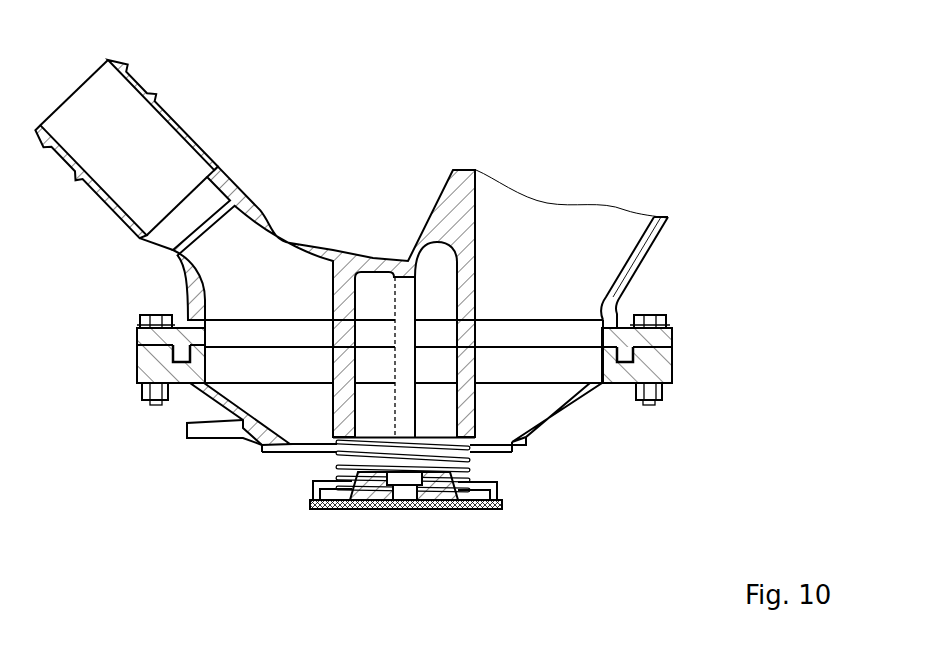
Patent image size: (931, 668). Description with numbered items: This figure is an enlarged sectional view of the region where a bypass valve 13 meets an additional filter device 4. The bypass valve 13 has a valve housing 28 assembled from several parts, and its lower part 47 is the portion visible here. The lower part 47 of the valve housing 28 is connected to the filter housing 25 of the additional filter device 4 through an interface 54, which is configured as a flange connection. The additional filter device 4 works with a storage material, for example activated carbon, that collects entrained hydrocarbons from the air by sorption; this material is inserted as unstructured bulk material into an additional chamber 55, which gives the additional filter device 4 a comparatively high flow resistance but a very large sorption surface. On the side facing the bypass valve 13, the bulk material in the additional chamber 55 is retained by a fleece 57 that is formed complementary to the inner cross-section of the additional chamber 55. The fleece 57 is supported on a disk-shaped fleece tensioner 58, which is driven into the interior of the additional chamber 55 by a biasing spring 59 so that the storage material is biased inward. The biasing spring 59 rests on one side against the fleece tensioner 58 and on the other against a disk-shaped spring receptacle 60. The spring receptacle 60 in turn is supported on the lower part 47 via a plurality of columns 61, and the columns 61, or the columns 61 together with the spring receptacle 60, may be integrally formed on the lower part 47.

The bypass valve 13 is at (190, 115).
The lower part 47 is at (255, 198).
The columns 61 is at (456, 286).
The valve housing 28 is at (674, 251).
The interface 54 is at (705, 370).
The filter housing 25 is at (601, 413).
The additional filter device 4 is at (576, 432).
The spring receptacle 60 is at (337, 463).
The biasing spring 59 is at (318, 488).
The fleece tensioner 58 is at (498, 490).
The fleece 57 is at (462, 512).
The additional chamber 55 is at (417, 576).